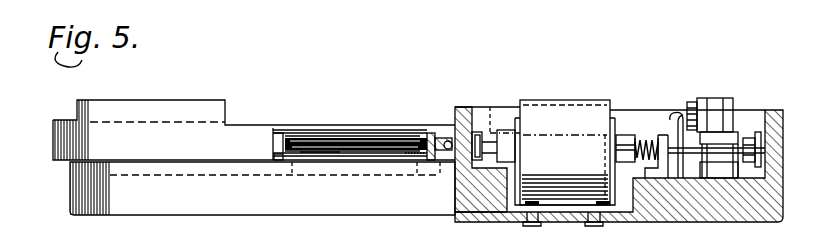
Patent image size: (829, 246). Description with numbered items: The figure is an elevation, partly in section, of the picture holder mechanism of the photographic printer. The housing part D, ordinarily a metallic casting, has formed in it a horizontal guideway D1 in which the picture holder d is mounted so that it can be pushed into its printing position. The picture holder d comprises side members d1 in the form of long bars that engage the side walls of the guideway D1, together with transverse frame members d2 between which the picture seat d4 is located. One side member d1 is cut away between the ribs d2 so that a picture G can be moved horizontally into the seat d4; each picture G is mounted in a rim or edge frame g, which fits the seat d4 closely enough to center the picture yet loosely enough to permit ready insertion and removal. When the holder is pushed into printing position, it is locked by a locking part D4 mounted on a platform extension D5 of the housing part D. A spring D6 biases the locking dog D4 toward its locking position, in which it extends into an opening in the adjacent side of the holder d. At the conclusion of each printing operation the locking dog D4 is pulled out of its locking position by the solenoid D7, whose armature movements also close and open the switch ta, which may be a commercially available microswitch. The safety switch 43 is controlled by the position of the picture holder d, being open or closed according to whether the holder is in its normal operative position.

The housing part D is at (352, 216).
The guideway D1 is at (280, 160).
The picture holder d is at (350, 140).
The rim or edge frame g is at (300, 140).
The picture G is at (352, 150).
The picture seat d4 is at (322, 152).
The transverse frame members d2 is at (408, 156).
The side members d1 is at (280, 128).
The locking part D4 is at (452, 128).
The platform extension D5 is at (705, 210).
The solenoid D7 is at (556, 108).
The spring D6 is at (647, 135).
The switch ta is at (735, 137).
The safety switch 43 is at (712, 100).